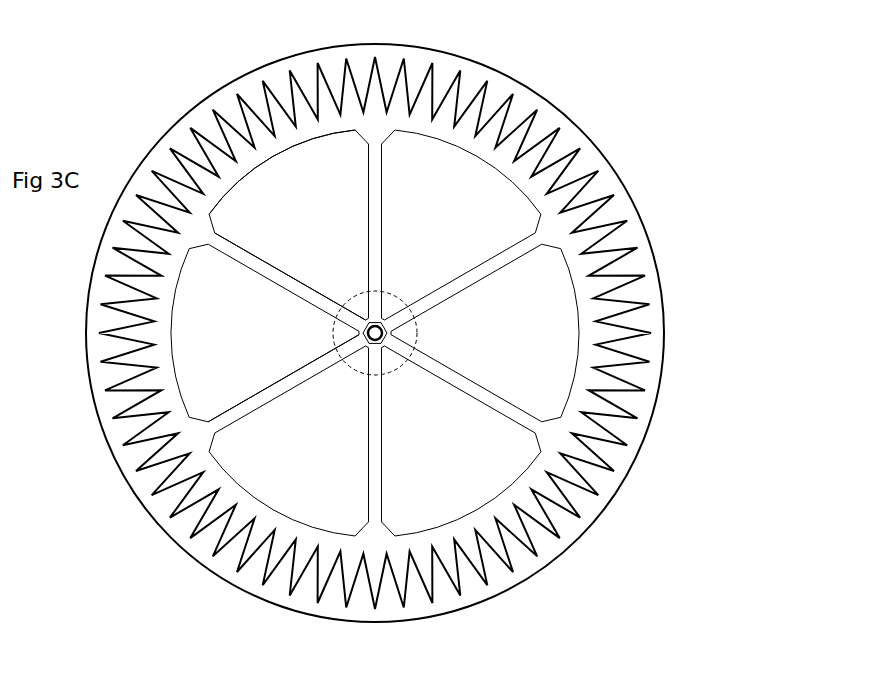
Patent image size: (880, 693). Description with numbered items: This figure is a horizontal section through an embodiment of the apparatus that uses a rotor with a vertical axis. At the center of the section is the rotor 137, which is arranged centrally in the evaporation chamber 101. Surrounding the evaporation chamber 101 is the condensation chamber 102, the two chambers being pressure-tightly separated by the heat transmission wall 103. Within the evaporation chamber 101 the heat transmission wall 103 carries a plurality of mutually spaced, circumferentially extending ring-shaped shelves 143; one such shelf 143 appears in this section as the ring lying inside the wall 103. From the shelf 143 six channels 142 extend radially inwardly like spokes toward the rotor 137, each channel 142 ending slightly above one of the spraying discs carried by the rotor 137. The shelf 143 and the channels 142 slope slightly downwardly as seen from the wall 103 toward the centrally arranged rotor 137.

The evaporation chamber 101 is at (375, 333).
The condensation chamber 102 is at (592, 162).
The heat transmission wall 103 is at (640, 274).
The rotor 137 is at (359, 301).
The channel 142 is at (271, 268).
The ring-shaped shelf 143 is at (252, 160).